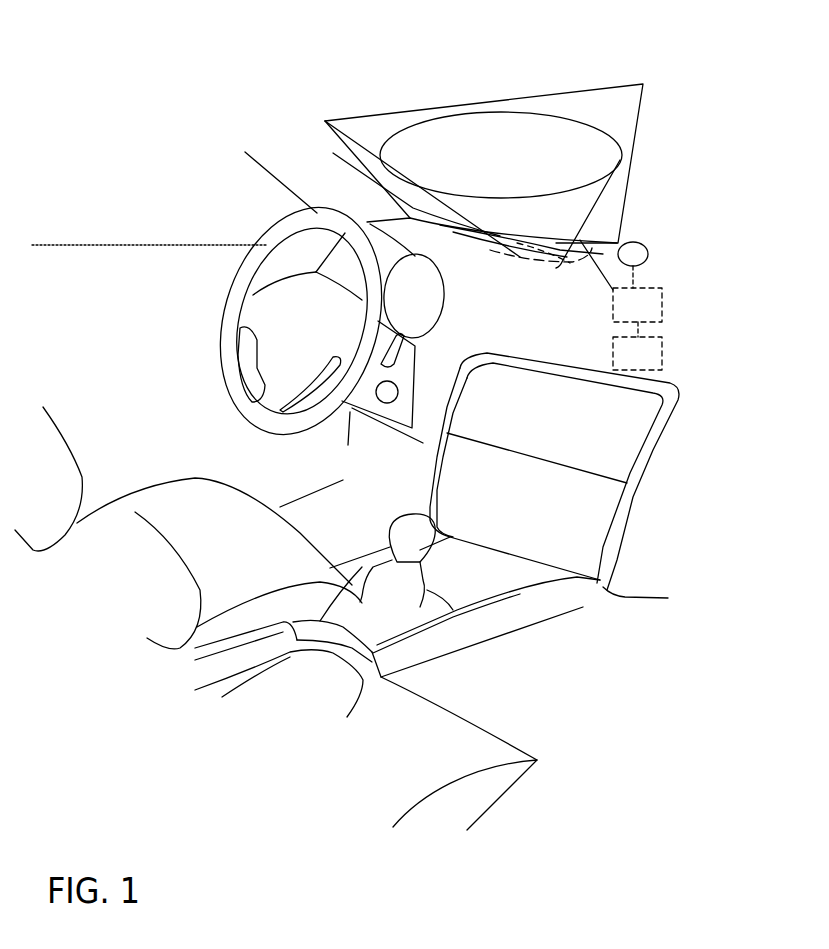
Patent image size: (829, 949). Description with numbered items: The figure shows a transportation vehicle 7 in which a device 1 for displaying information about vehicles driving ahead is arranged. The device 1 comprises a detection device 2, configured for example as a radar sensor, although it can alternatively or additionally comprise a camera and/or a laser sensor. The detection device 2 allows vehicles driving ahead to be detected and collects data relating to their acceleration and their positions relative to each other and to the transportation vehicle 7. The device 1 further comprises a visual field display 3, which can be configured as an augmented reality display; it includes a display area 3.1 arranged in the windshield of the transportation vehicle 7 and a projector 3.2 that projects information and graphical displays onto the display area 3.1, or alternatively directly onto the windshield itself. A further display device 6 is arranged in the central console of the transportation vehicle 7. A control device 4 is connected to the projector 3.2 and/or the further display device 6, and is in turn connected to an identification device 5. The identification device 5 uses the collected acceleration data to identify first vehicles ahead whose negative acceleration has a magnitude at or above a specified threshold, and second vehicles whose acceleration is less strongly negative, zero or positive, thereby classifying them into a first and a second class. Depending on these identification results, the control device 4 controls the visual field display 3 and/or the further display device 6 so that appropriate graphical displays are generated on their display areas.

The device 1 is at (668, 535).
The detection device 2 is at (634, 243).
The visual field display 3 is at (342, 102).
The display area 3.1 is at (609, 102).
The projector 3.2 is at (534, 262).
The control device 4 is at (661, 301).
The identification device 5 is at (661, 354).
The further display device 6 is at (642, 413).
The transportation vehicle 7 is at (130, 130).